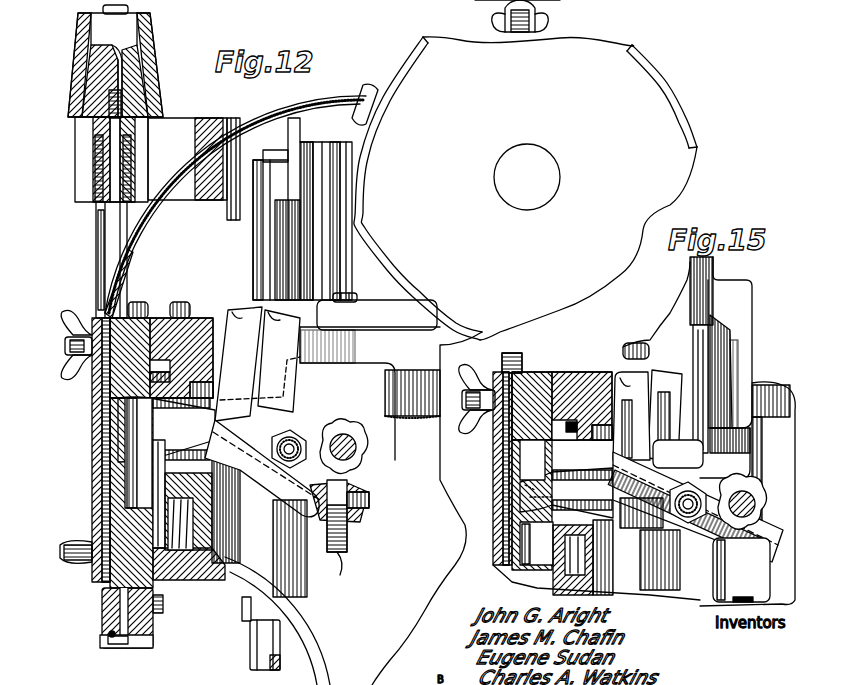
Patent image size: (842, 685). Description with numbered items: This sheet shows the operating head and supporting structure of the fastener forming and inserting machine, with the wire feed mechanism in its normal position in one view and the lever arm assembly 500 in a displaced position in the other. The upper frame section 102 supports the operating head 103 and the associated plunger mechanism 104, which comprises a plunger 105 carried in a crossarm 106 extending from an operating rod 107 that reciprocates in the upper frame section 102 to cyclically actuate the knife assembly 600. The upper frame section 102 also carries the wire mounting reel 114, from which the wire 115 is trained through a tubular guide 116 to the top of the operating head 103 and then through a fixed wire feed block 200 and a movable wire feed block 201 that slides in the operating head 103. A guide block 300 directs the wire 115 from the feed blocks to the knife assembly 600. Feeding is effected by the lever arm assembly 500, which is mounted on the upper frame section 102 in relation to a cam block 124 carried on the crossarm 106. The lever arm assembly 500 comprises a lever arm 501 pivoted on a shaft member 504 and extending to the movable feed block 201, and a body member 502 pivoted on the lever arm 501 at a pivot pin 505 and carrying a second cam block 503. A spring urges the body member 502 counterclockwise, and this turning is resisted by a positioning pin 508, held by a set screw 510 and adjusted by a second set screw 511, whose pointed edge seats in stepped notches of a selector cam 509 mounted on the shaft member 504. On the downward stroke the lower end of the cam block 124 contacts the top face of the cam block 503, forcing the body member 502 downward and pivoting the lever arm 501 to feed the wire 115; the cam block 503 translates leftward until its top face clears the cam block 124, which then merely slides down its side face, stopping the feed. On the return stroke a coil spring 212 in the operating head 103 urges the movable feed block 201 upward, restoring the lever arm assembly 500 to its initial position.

In FIG. 12, the upper frame section 102 is at (375, 635).
In FIG. 15, the upper frame section 102 is at (780, 383).
In FIG. 12, the operating head 103 is at (153, 620).
In FIG. 15, the operating head 103 is at (580, 395).
In FIG. 12, the plunger mechanism 104 is at (75, 132).
In FIG. 12, the plunger 105 is at (97, 240).
In FIG. 12, the crossarm 106 is at (178, 118).
In FIG. 12, the operating rod 107 is at (262, 240).
In FIG. 12, the wire mounting reel 114 is at (418, 80).
In FIG. 12, the wire 115 is at (100, 480).
In FIG. 15, the wire 115 is at (495, 447).
In FIG. 12, the tubular guide 116 is at (158, 215).
In FIG. 12, the cam block 124 is at (296, 258).
In FIG. 15, the cam block 124 is at (712, 365).
In FIG. 12, the wire feed block 200 is at (90, 376).
In FIG. 15, the wire feed block 200 is at (492, 378).
In FIG. 12, the movable wire feed block 201 is at (112, 410).
In FIG. 15, the movable wire feed block 201 is at (528, 485).
In FIG. 12, the coil spring 212 is at (188, 560).
In FIG. 12, the guide block 300 is at (100, 575).
In FIG. 12, the lever arm assembly 500 is at (264, 500).
In FIG. 15, the lever arm assembly 500 is at (677, 560).
In FIG. 12, the lever arm 501 is at (108, 436).
In FIG. 15, the lever arm 501 is at (514, 497).
In FIG. 12, the body member 502 is at (232, 318).
In FIG. 15, the body member 502 is at (632, 385).
In FIG. 12, the second cam block 503 is at (262, 310).
In FIG. 15, the second cam block 503 is at (660, 378).
In FIG. 12, the shaft member 504 is at (357, 455).
In FIG. 12, the pivot pin 505 is at (275, 447).
In FIG. 12, the positioning pin 508 is at (350, 484).
In FIG. 15, the positioning pin 508 is at (755, 544).
In FIG. 12, the selector cam 509 is at (368, 440).
In FIG. 15, the selector cam 509 is at (750, 486).
In FIG. 12, the set screw 510 is at (352, 515).
In FIG. 12, the second set screw 511 is at (350, 572).
In FIG. 12, the knife assembly 600 is at (115, 650).